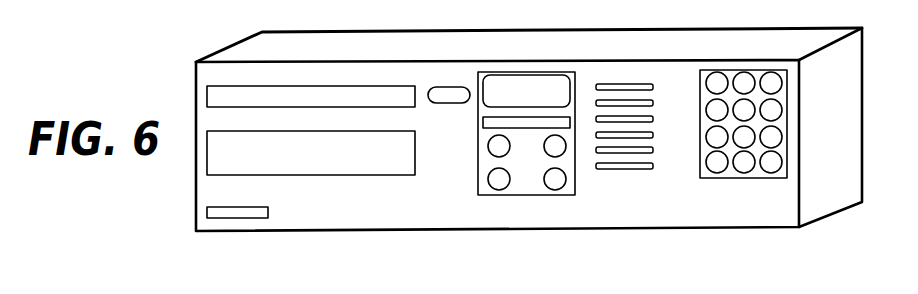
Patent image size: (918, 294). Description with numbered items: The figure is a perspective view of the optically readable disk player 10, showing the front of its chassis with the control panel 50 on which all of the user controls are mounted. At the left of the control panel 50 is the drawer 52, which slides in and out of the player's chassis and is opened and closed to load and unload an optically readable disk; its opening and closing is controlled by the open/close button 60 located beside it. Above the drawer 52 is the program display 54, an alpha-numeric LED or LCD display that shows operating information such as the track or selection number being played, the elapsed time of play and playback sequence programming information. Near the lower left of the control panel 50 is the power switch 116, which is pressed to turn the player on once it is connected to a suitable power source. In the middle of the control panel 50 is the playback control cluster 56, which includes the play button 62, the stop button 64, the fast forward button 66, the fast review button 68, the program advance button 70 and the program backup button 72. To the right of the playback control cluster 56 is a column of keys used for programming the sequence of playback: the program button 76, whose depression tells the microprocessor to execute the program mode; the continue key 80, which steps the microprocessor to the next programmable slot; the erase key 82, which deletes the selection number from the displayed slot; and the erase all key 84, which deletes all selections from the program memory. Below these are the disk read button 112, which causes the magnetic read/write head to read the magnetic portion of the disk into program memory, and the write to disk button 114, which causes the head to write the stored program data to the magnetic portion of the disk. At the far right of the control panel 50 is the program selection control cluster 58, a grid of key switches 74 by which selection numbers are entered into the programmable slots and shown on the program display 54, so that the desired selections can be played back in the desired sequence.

The optically readable disk player 10 is at (175, 58).
The control panel 50 is at (713, 215).
The drawer 52 is at (342, 158).
The program display 54 is at (329, 92).
The playback control cluster 56 is at (527, 204).
The program selection control cluster 58 is at (745, 182).
The open/close button 60 is at (452, 90).
The play button 62 is at (517, 81).
The stop button 64 is at (487, 121).
The fast forward button 66 is at (556, 146).
The fast review button 68 is at (496, 144).
The program advance button 70 is at (556, 182).
The program backup button 72 is at (494, 177).
The key switches 74 is at (772, 135).
The program button 76 is at (640, 84).
The continue key 80 is at (594, 103).
The erase key 82 is at (651, 120).
The erase all key 84 is at (595, 135).
The disk read button 112 is at (651, 150).
The write to disk button 114 is at (637, 168).
The power switch 116 is at (248, 210).